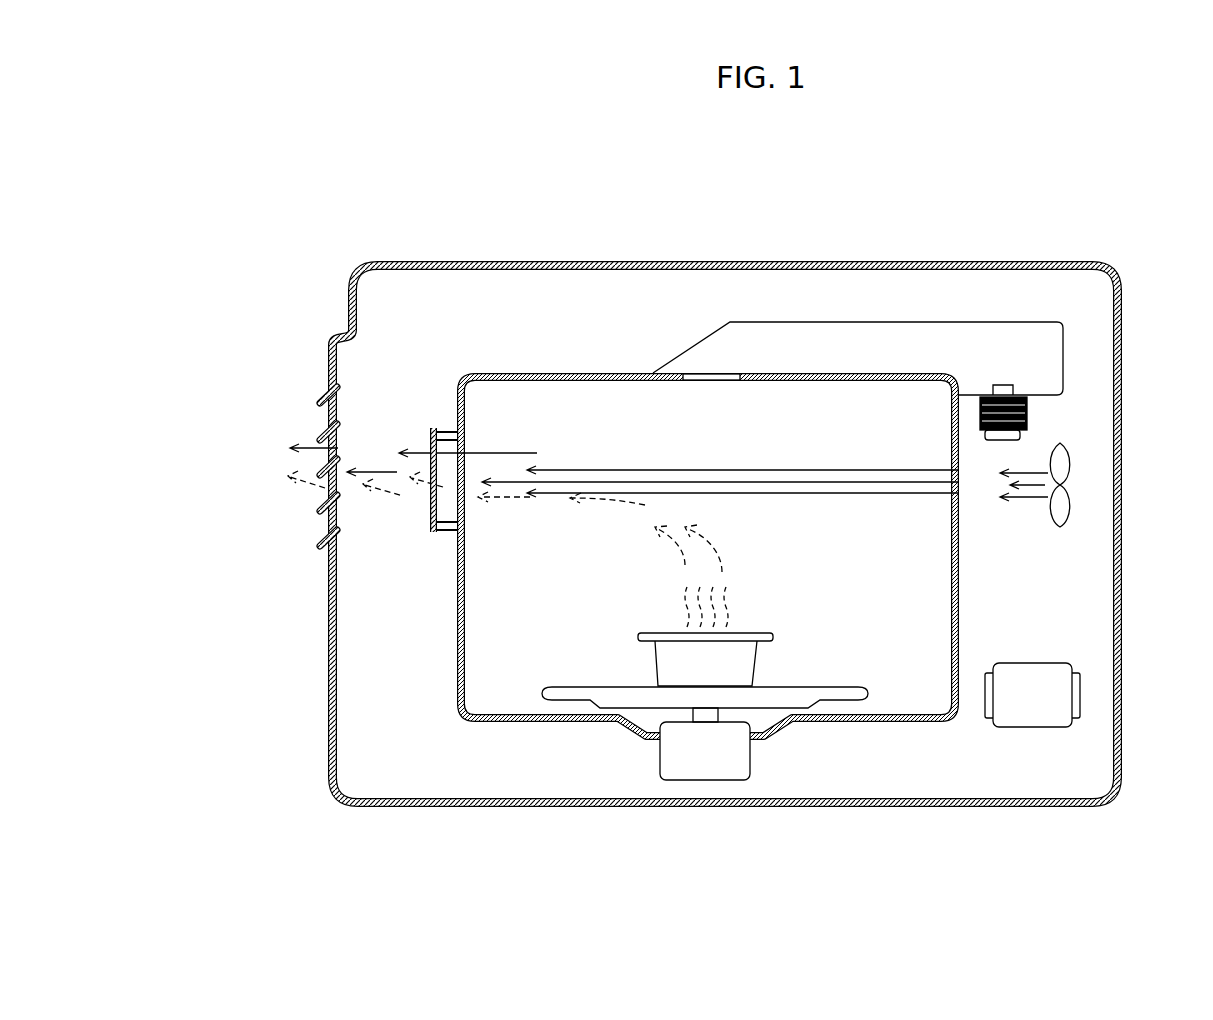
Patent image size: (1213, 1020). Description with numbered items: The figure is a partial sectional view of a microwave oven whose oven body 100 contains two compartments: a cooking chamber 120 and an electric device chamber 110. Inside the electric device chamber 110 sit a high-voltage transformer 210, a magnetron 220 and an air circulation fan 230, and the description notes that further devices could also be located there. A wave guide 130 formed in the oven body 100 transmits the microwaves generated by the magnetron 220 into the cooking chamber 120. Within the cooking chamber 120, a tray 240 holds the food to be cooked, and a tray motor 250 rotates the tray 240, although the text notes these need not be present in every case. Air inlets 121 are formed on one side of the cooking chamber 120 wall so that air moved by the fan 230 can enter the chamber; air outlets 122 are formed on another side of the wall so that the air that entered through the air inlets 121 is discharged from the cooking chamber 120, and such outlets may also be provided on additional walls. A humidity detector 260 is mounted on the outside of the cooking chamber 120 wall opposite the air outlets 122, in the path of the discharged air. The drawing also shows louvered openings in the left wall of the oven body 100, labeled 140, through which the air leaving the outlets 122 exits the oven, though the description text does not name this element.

The oven body 100 is at (1112, 235).
The electric device chamber 110 is at (1050, 616).
The cooking chamber 120 is at (868, 615).
The air inlets 121 is at (960, 514).
The air outlets 122 is at (468, 507).
The wave guide 130 is at (832, 310).
The exhaust louver 140 is at (300, 430).
The high-voltage transformer 210 is at (1038, 717).
The magnetron 220 is at (1028, 417).
The air circulation fan 230 is at (1065, 500).
The tray 240 is at (573, 690).
The tray motor 250 is at (752, 765).
The humidity detector 260 is at (426, 514).